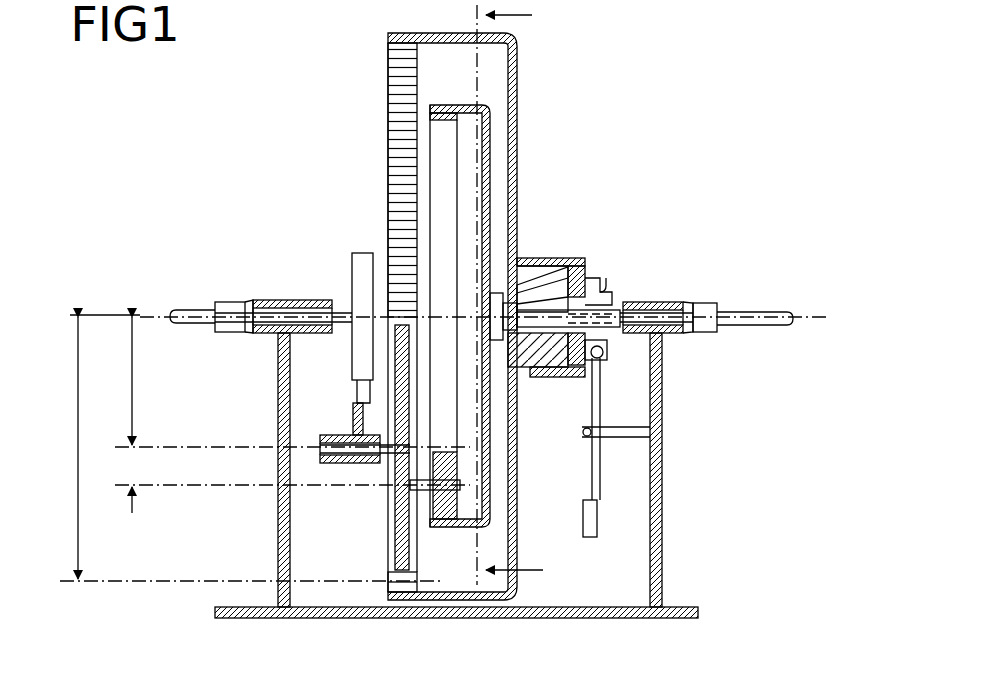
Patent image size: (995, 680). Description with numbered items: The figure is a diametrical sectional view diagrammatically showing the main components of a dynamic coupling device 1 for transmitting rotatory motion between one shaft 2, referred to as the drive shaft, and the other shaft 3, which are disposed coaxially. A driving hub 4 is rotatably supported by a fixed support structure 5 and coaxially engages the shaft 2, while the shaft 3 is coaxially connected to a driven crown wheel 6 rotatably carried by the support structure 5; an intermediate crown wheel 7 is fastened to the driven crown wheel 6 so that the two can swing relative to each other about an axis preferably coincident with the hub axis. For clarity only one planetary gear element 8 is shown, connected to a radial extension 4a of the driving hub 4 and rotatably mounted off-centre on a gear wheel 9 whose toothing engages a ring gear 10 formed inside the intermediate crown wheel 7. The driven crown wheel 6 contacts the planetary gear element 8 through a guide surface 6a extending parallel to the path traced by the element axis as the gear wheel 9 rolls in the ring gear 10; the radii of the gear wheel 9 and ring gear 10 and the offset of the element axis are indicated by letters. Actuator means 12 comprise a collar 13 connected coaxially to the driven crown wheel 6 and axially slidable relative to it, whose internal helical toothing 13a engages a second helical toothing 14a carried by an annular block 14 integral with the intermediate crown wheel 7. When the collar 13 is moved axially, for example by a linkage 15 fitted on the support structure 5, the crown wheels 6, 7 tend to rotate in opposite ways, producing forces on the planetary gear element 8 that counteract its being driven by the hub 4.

The dynamic coupling device 1 is at (752, 92).
The shaft 2 is at (178, 305).
The shaft 3 is at (782, 307).
The driving hub 4 is at (360, 300).
The radial extension 4a is at (353, 403).
The fixed support structure 5 is at (623, 612).
The driven crown wheel 6 is at (468, 358).
The guide surface 6a is at (443, 143).
The intermediate crown wheel 7 is at (450, 342).
The planetary gear member 8 is at (447, 527).
The gear wheel 9 is at (395, 535).
The ring gear 10 is at (388, 75).
The actuator means 12 is at (604, 258).
The collar 13 is at (570, 262).
The helical toothing 13a is at (600, 280).
The annular block 14 is at (606, 352).
The second helical toothing 14a is at (535, 258).
The linkage 15 is at (598, 400).